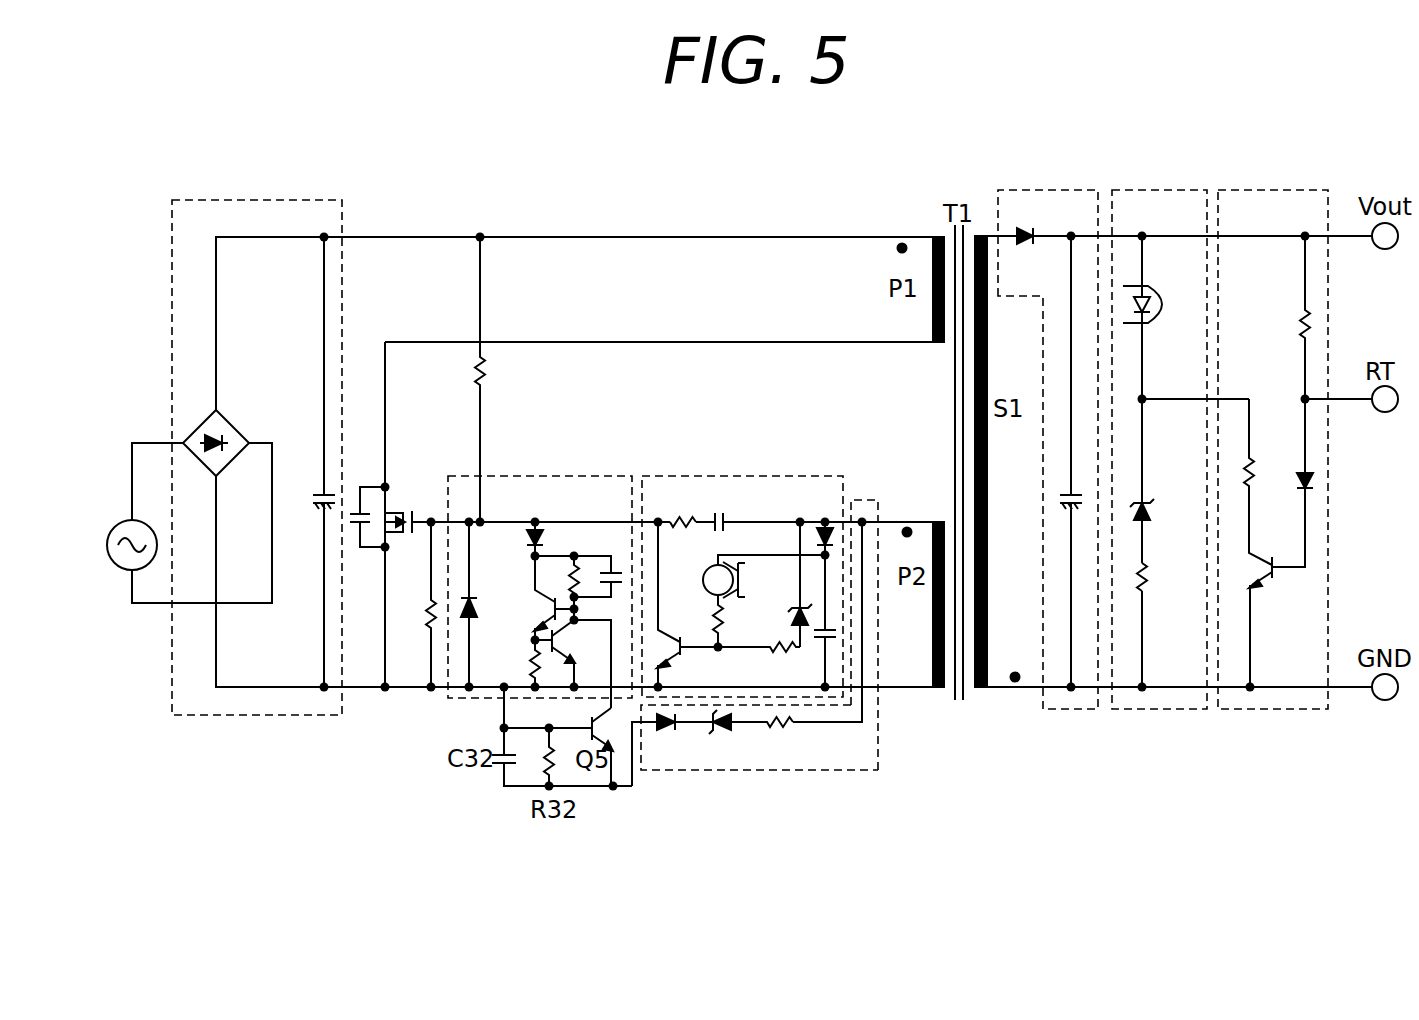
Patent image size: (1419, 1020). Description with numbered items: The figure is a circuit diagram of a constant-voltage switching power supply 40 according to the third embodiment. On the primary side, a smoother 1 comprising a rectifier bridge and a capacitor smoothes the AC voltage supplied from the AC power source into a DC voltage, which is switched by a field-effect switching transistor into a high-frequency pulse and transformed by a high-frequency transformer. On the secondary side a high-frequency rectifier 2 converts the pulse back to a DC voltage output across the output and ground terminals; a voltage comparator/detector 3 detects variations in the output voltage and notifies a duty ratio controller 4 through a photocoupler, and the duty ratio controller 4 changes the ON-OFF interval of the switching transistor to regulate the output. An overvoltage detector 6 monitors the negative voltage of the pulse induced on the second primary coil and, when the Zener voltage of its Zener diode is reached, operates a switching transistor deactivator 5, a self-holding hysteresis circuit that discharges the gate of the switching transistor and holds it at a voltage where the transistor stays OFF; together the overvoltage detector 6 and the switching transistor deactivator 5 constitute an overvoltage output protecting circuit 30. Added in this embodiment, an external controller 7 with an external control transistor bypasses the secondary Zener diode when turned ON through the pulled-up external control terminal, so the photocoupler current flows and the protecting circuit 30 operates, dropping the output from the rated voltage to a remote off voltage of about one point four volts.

The smoother 1 is at (308, 200).
The high-frequency rectifier 2 is at (1070, 190).
The voltage comparator/detector 3 is at (1180, 190).
The duty ratio controller 4 is at (808, 476).
The switching transistor deactivator 5 is at (545, 476).
The overvoltage detector 6 is at (682, 771).
The external controller 7 is at (1303, 190).
The overvoltage output protecting circuit 30 is at (900, 758).
The constant-voltage switching power supply 40 is at (662, 212).